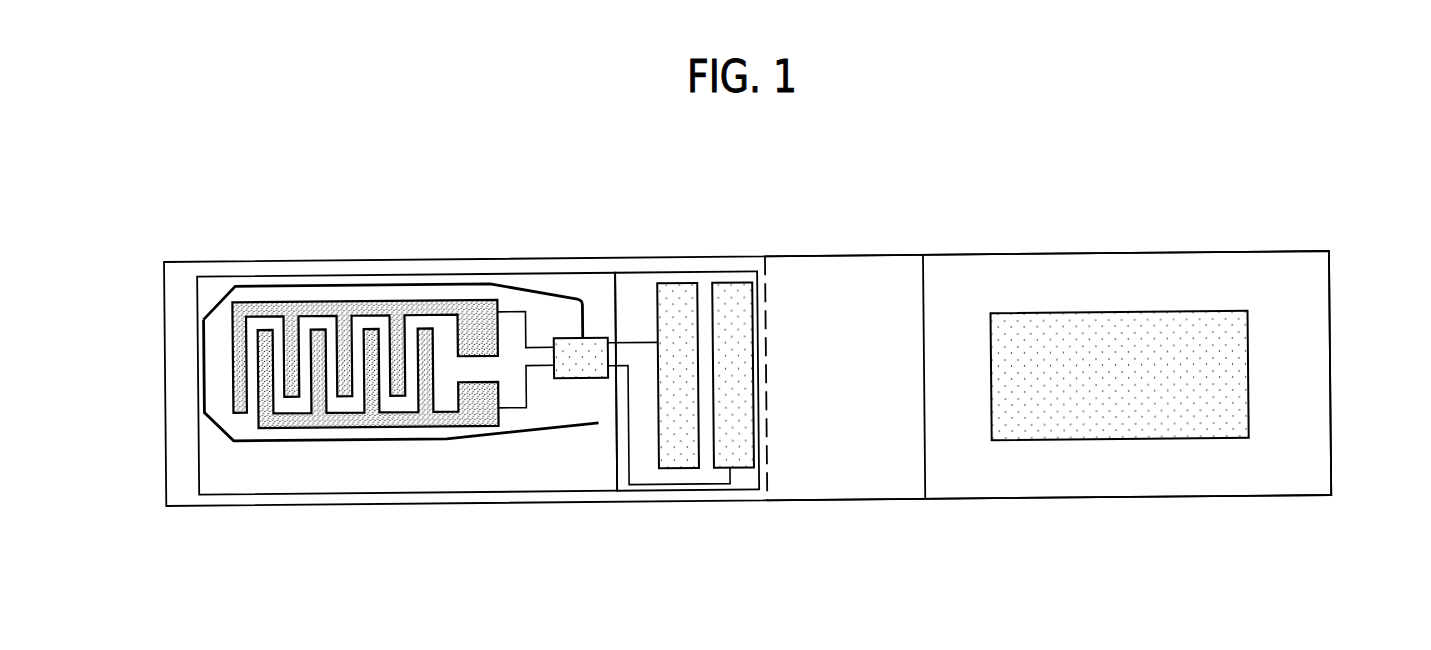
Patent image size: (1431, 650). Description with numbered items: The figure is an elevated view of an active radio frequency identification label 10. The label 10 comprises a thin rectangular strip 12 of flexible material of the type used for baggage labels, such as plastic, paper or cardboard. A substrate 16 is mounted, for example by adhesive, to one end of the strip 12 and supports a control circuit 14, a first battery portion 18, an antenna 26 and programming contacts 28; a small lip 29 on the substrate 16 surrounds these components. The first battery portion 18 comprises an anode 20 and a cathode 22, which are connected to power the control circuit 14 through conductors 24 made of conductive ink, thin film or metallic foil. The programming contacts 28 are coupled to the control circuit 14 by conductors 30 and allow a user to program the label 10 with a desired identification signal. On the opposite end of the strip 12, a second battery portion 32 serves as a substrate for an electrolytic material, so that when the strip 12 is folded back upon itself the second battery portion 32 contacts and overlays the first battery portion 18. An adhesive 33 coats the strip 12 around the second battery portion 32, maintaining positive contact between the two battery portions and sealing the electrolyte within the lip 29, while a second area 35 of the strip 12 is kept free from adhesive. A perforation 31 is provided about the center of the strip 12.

The active radio frequency identification label 10 is at (171, 229).
The strip 12 is at (882, 280).
The control circuit 14 is at (565, 338).
The substrate 16 is at (623, 292).
The first battery portion 18 is at (365, 369).
The anode 20 is at (455, 428).
The cathode 22 is at (465, 310).
The conductors 24 is at (512, 315).
The antenna 26 is at (223, 438).
The programming contacts 28 is at (728, 302).
The lip 29 is at (240, 277).
The conductors 30 is at (633, 346).
The perforation 31 is at (765, 293).
The second battery portion 32 is at (1116, 334).
The adhesive 33 is at (997, 493).
The second area 35 is at (890, 490).